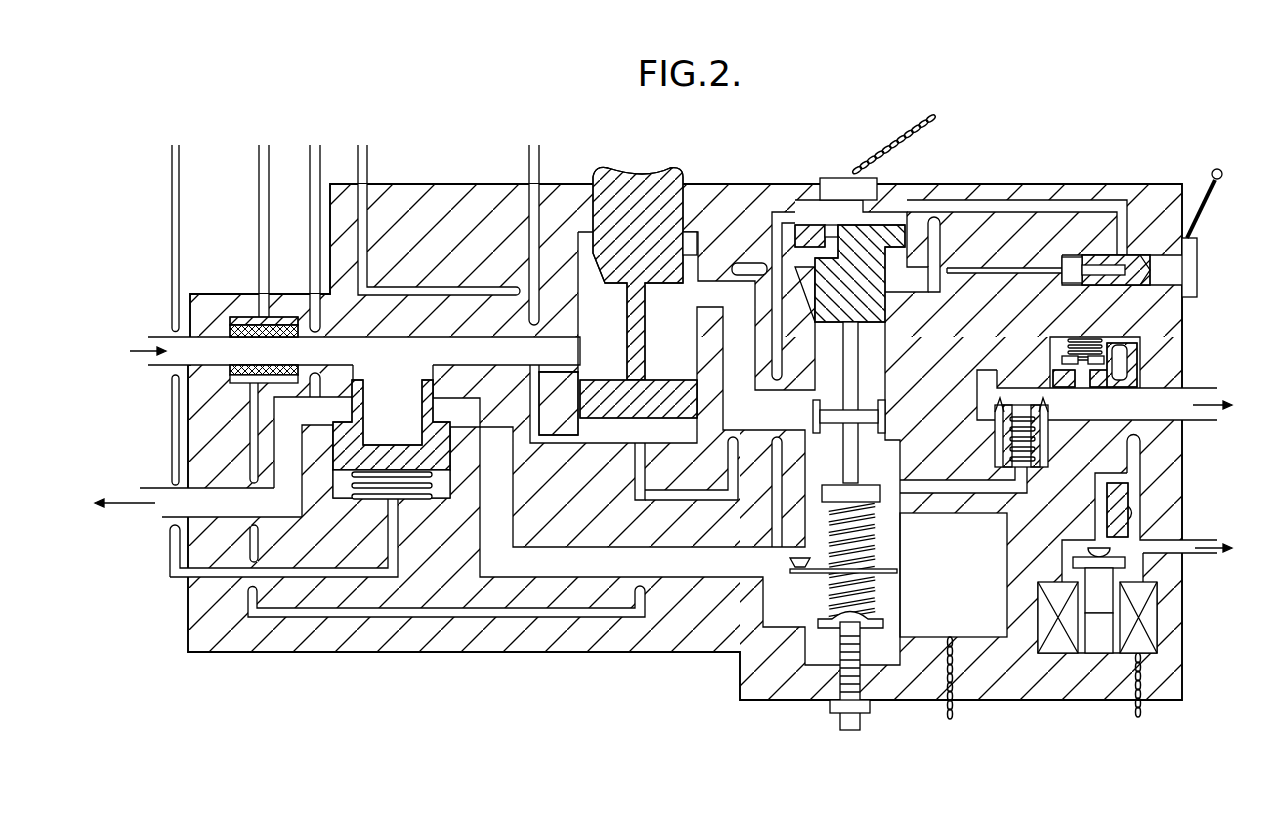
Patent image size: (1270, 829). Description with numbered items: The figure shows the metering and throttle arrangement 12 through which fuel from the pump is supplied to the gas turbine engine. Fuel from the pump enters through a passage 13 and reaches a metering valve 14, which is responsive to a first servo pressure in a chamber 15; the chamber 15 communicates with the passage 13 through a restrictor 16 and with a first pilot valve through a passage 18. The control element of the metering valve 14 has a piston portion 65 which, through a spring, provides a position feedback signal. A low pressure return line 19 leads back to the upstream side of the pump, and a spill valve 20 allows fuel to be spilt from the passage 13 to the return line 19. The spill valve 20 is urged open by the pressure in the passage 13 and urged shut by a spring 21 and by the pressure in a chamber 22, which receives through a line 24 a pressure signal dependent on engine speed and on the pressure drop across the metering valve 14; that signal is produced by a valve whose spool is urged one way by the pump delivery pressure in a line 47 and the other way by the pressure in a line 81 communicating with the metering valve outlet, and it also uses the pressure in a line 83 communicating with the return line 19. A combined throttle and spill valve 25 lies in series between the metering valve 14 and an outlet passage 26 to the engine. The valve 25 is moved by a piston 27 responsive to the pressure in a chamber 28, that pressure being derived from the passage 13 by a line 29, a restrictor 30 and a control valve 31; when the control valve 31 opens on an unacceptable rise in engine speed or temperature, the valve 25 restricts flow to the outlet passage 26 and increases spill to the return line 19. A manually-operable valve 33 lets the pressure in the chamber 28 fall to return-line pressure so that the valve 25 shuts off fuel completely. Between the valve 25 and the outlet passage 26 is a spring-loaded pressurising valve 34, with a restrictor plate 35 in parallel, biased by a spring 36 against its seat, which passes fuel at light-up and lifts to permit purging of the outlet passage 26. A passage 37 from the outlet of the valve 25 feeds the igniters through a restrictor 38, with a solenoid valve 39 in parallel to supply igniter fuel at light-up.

The metering and throttle arrangement 12 is at (420, 652).
The passage 13 is at (160, 338).
The metering valve 14 is at (686, 265).
The chamber 15 is at (605, 418).
The restrictor 16 is at (642, 465).
The passage 18 is at (540, 166).
The low pressure return line 19 is at (157, 513).
The spill valve 20 is at (352, 435).
The spring 21 is at (355, 488).
The chamber 22 is at (370, 478).
The line 24 is at (174, 190).
The combined throttle and spill valve 25 is at (858, 364).
The outlet passage 26 is at (1200, 392).
The piston 27 is at (807, 228).
The chamber 28 is at (830, 226).
The line 29 is at (745, 262).
The restrictor 30 is at (838, 224).
The control valve 31 is at (795, 572).
The manually-operable valve 33 is at (1140, 262).
The spring-loaded pressurising valve 34 is at (1043, 416).
The restrictor plate 35 is at (1105, 357).
The spring 36 is at (1068, 346).
The passage 37 is at (1135, 455).
The restrictor 38 is at (1136, 513).
The solenoid valve 39 is at (1108, 554).
The line 47 is at (262, 190).
The piston portion 65 is at (639, 183).
The line 81 is at (360, 180).
The line 83 is at (312, 190).